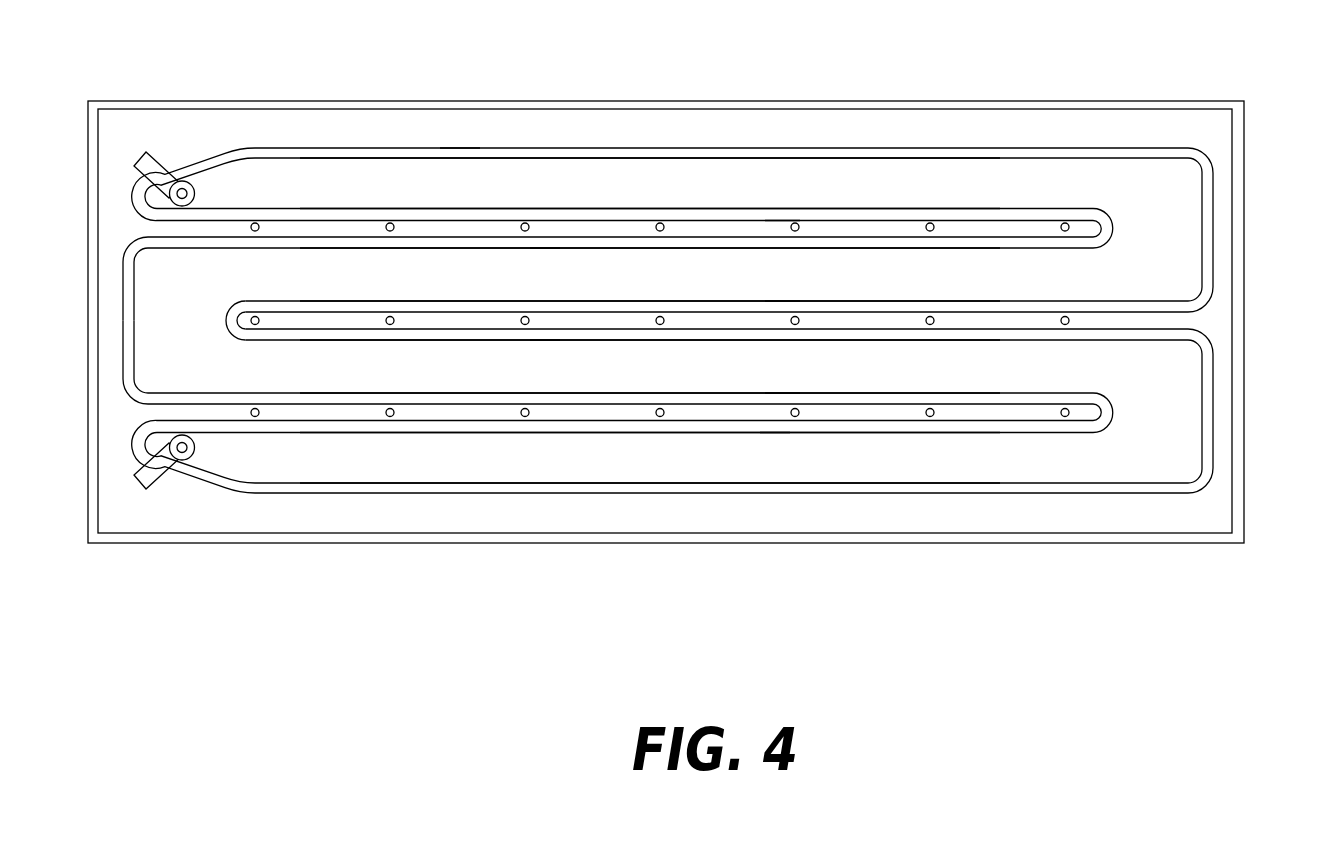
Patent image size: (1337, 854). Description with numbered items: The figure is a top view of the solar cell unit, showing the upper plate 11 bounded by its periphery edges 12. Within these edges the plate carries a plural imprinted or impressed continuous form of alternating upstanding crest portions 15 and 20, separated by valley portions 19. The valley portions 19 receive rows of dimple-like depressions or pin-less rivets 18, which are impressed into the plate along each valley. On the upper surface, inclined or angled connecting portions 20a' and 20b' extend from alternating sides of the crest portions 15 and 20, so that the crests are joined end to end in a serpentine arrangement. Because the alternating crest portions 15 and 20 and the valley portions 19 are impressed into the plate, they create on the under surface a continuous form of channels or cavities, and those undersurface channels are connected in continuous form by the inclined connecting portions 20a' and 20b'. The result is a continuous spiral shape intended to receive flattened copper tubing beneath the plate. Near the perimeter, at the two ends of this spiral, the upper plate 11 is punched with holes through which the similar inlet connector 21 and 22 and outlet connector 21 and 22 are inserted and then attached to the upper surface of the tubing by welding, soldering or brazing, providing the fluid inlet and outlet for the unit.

The upper plate 11 is at (355, 127).
The periphery edges 12 is at (752, 102).
The upstanding crest portion 15 is at (1138, 194).
The dimple-like depressions or pin-less rivets 18 is at (658, 223).
The valley portions 19 is at (1003, 226).
The upstanding crest portion 20 is at (650, 320).
The inclined connecting portion 20a' is at (647, 312).
The inclined connecting portion 20b' is at (811, 282).
The inlet connector 21 is at (143, 158).
The outlet connector 22 is at (185, 181).